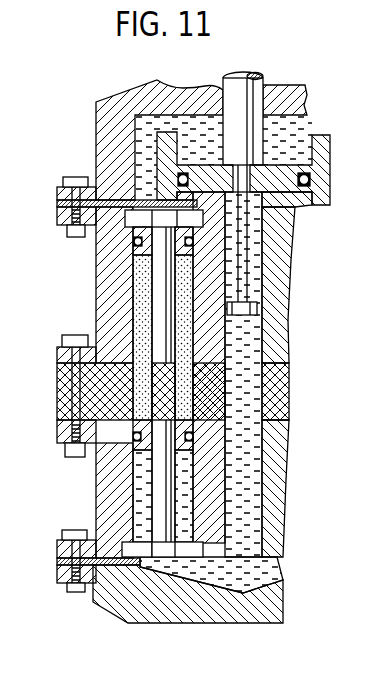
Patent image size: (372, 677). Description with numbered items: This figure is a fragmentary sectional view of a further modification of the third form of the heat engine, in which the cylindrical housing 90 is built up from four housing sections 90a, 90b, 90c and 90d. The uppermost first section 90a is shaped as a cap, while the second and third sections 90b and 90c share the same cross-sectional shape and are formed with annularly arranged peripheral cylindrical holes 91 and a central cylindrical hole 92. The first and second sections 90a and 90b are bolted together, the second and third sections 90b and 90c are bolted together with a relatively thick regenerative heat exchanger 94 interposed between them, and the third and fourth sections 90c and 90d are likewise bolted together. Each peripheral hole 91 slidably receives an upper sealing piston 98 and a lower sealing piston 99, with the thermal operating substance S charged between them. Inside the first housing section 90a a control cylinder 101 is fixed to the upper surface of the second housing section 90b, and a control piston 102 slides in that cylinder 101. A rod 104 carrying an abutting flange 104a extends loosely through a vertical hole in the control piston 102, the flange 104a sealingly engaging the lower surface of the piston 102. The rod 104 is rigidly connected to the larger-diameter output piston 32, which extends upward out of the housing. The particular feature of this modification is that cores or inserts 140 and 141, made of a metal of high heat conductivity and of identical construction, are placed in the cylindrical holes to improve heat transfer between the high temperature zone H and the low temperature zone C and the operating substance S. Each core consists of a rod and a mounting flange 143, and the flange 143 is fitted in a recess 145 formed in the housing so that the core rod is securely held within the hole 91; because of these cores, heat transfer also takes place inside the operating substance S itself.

The output piston 32 is at (243, 85).
The cylindrical housing 90 is at (171, 351).
The first housing section 90a is at (97, 135).
The second housing section 90b is at (105, 293).
The third housing section 90c is at (97, 512).
The fourth housing section 90d is at (268, 602).
The control cylinder 101 is at (330, 157).
The control piston 102 is at (298, 197).
The rod 104 is at (240, 260).
The abutting flange 104a is at (257, 308).
The upper sealing piston 98 is at (133, 245).
The thermal operating substance S is at (140, 320).
The regenerative heat exchanger 94 is at (57, 400).
The lower sealing piston 99 is at (133, 445).
The peripheral cylindrical hole 91 is at (185, 512).
The core 140 is at (165, 335).
The core 141 is at (163, 468).
The central cylindrical hole 92 is at (262, 350).
The hot region H is at (330, 300).
The cold region C is at (311, 497).
The mounting flange 143 is at (132, 550).
The recess 145 is at (197, 550).